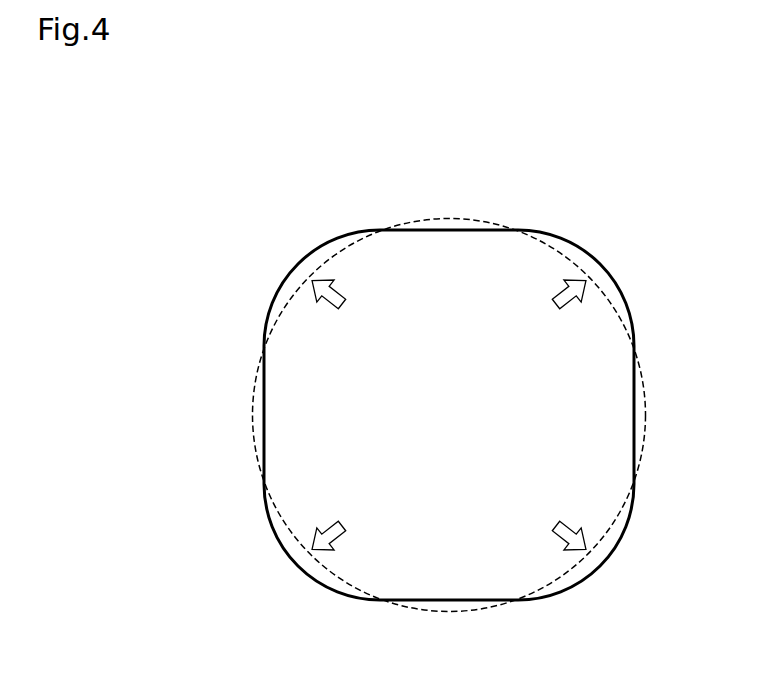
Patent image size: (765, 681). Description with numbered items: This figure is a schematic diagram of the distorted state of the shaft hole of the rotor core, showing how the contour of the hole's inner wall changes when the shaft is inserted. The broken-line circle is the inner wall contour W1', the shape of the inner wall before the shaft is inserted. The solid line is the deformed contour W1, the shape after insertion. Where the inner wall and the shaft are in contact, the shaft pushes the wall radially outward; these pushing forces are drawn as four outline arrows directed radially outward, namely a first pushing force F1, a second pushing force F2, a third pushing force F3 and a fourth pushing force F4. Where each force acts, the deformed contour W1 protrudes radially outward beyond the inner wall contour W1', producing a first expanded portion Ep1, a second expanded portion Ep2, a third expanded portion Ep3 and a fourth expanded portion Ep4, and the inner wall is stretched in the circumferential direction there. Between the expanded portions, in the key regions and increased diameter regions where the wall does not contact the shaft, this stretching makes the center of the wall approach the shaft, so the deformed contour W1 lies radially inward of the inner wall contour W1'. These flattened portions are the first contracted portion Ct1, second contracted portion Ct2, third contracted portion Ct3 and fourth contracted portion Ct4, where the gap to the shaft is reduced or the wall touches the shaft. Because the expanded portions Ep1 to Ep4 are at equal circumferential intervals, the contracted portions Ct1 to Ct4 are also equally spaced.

The deformed contour W1 is at (446, 398).
The inner wall contour W1' is at (449, 381).
The first expanded portion Ep1 is at (599, 264).
The second expanded portion Ep2 is at (599, 566).
The third expanded portion Ep3 is at (299, 566).
The fourth expanded portion Ep4 is at (299, 264).
The first contracted portion Ct1 is at (633, 416).
The second contracted portion Ct2 is at (449, 599).
The third contracted portion Ct3 is at (265, 413).
The fourth contracted portion Ct4 is at (449, 231).
The first pushing force F1 is at (572, 307).
The second pushing force F2 is at (572, 520).
The third pushing force F3 is at (326, 520).
The fourth pushing force F4 is at (326, 307).